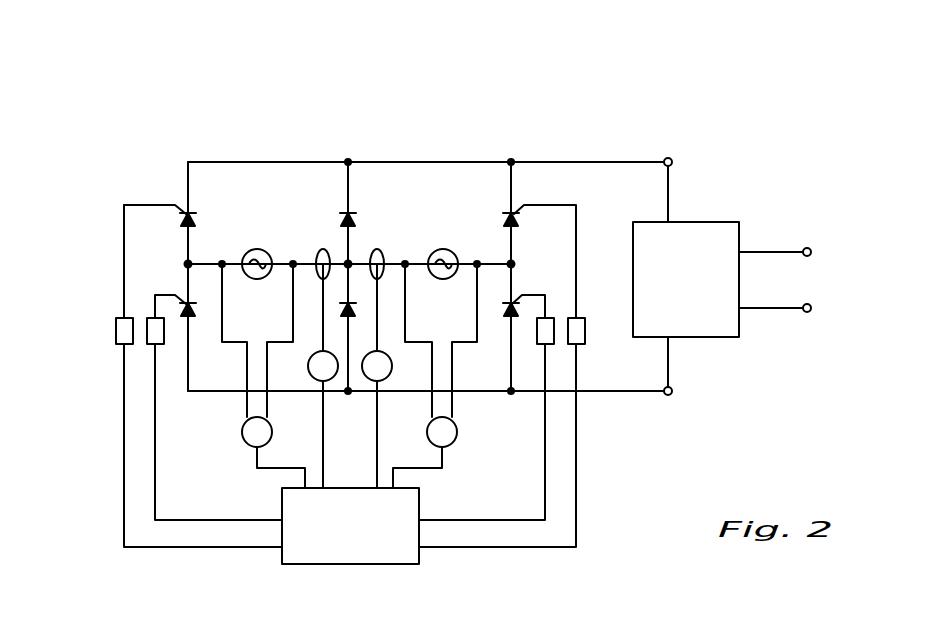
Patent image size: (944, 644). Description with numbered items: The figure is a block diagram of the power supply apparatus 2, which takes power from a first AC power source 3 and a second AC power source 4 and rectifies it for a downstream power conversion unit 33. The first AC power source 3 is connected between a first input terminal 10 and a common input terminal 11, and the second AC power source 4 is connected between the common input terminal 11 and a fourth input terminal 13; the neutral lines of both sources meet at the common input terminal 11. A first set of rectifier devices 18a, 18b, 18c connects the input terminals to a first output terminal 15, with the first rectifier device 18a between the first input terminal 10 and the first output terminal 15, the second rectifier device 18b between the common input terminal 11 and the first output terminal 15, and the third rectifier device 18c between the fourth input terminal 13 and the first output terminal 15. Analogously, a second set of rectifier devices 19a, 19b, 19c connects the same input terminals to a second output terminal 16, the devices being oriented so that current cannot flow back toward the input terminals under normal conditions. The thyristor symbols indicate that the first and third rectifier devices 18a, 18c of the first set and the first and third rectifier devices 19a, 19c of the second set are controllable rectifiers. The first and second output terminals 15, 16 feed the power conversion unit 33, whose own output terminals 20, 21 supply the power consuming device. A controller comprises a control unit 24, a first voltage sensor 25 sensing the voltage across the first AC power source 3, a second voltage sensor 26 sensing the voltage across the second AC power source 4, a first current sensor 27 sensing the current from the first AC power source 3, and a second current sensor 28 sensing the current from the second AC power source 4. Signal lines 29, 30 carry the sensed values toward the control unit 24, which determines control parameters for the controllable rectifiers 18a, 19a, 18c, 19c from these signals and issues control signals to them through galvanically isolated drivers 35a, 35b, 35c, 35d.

The power supply apparatus 2 is at (492, 80).
The first AC power source 3 is at (257, 280).
The second AC power source 4 is at (443, 280).
The first input terminal 10 is at (190, 262).
The common input terminal 11 is at (347, 263).
The fourth input terminal 13 is at (510, 263).
The first output terminal 15 is at (670, 158).
The second output terminal 16 is at (673, 391).
The first rectifier device of the first set 18a is at (195, 216).
The second rectifier device of the first set 18b is at (353, 220).
The third rectifier device of the first set 18c is at (516, 222).
The first rectifier device of the second set 19a is at (192, 307).
The second rectifier device of the second set 19b is at (352, 303).
The third rectifier device of the second set 19c is at (509, 305).
The output terminal 20 is at (809, 247).
The output terminal 21 is at (809, 313).
The control unit 24 is at (421, 553).
The first voltage sensor 25 is at (270, 436).
The second voltage sensor 26 is at (453, 440).
The first current sensor 27 is at (328, 381).
The second current sensor 28 is at (381, 381).
The control line 29 is at (300, 482).
The control line 30 is at (395, 482).
The power conversion unit 33 is at (697, 221).
The galvanically isolated driver 35a is at (116, 318).
The galvanically isolated driver 35b is at (155, 318).
The galvanically isolated driver 35c is at (553, 320).
The galvanically isolated driver 35d is at (586, 332).